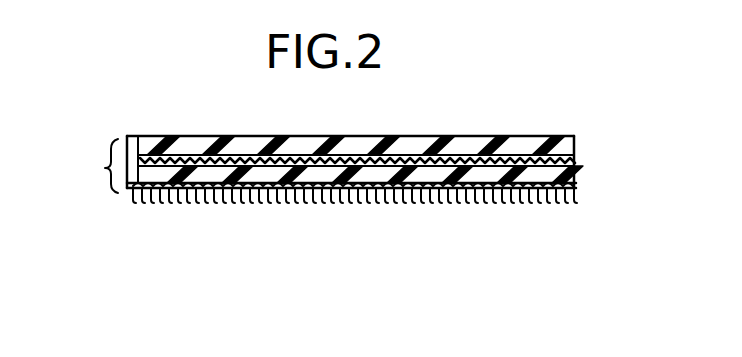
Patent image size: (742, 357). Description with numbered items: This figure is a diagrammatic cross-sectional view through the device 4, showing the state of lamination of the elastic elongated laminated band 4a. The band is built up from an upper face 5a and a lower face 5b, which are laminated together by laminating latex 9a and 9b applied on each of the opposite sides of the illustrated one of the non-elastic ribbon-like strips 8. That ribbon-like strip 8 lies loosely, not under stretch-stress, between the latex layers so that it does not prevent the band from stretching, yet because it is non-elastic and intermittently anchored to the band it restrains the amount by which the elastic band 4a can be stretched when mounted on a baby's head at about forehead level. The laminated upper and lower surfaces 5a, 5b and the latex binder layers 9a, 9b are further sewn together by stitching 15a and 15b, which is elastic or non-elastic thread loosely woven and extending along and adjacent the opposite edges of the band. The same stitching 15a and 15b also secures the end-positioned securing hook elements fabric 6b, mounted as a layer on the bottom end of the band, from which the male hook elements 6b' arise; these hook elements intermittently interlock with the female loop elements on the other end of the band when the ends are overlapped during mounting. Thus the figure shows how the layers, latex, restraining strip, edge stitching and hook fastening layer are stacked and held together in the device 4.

The device 4 is at (428, 86).
The elastic elongated laminated band 4a is at (103, 169).
The upper face 5a is at (350, 117).
The lower face 5b is at (385, 139).
The securing hook elements fabric 6b is at (385, 193).
The male hook elements 6b' is at (355, 218).
The non-elastic ribbon-like strips 8 is at (343, 160).
The laminating latex 9a is at (520, 150).
The laminating latex 9b is at (233, 128).
The stitching 15a is at (556, 137).
The stitching 15b is at (141, 110).